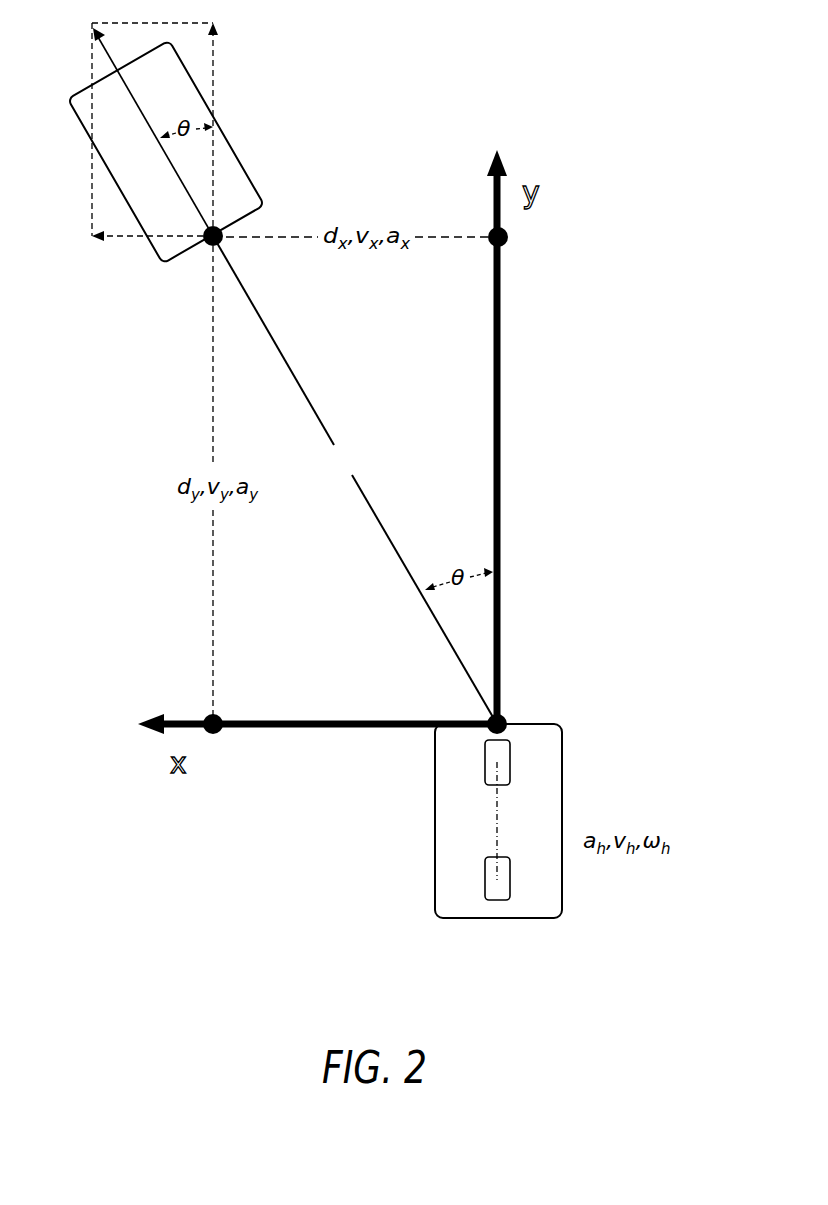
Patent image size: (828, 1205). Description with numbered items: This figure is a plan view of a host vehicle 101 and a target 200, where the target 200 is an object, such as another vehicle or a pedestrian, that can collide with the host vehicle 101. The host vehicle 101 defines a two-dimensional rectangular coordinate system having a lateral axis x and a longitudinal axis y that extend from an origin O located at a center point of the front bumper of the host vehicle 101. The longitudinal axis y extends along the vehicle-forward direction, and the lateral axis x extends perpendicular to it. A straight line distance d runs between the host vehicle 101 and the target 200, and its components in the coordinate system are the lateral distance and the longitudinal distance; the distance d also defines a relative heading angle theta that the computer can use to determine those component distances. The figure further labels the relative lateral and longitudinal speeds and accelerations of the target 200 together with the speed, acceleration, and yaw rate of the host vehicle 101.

The target 200 is at (247, 160).
The host vehicle 101 is at (562, 758).
The straight line distance d is at (355, 480).
The origin O is at (519, 708).